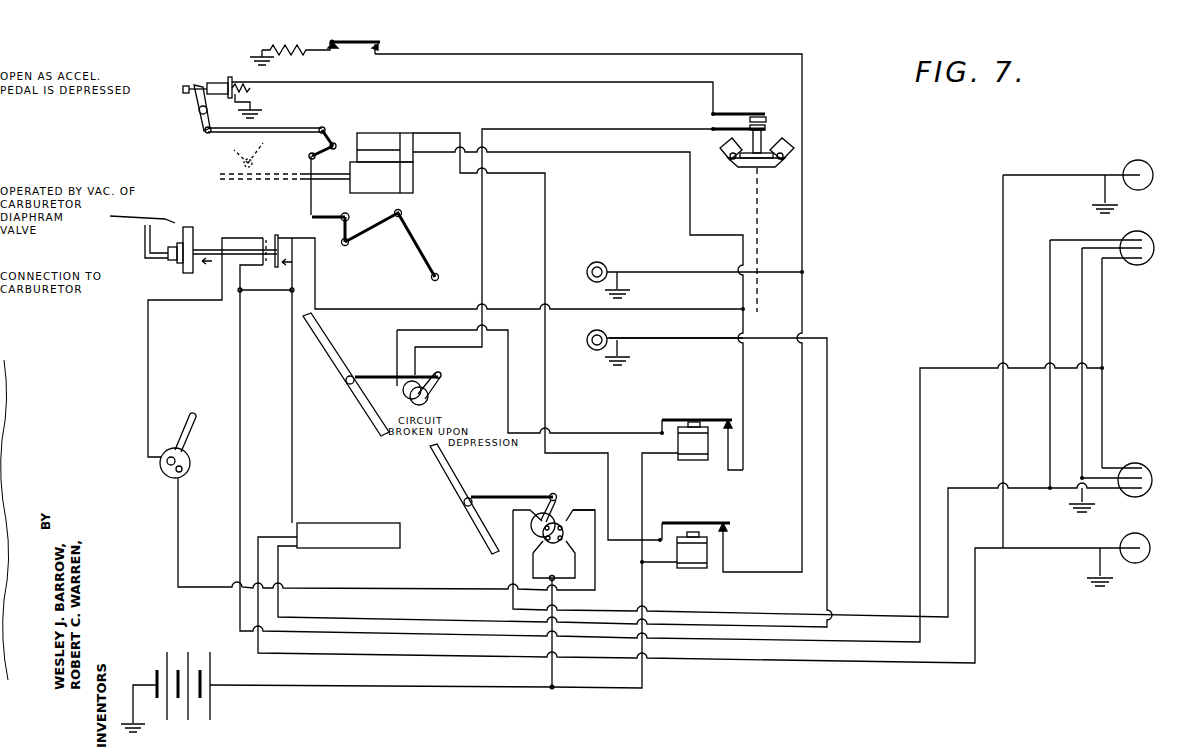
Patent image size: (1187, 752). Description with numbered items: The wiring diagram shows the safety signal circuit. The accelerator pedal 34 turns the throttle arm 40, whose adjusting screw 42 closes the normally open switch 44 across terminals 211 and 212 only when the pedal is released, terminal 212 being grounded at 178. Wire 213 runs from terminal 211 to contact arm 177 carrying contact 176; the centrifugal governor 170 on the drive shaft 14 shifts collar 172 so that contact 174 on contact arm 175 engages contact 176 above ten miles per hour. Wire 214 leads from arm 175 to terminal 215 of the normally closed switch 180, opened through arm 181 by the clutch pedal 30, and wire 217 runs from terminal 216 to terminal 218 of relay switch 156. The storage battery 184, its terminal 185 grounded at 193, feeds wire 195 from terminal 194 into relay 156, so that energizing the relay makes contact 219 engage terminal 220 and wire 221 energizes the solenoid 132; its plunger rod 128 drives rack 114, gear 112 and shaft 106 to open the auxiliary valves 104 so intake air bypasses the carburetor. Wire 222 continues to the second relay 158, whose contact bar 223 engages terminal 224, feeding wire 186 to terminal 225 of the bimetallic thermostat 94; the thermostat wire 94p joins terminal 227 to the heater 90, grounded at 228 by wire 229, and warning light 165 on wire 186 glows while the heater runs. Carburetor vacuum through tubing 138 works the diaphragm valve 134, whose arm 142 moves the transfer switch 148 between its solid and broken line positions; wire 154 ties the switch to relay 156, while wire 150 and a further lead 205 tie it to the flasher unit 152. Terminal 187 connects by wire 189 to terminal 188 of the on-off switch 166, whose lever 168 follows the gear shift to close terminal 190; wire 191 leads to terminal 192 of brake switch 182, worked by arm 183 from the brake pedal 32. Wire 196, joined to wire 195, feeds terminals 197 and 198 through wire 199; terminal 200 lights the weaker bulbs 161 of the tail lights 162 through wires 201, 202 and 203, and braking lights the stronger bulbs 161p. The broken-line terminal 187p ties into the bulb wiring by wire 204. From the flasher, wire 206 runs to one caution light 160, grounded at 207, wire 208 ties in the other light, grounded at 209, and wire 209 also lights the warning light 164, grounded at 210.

The drive shaft 14 is at (790, 215).
The clutch pedal 30 is at (340, 370).
The brake pedal 32 is at (448, 482).
The accelerator pedal 34 is at (418, 238).
The arm 40 is at (202, 127).
The adjusting screw 42 is at (183, 86).
The normally open switch 44 is at (210, 82).
The heating element 90 is at (296, 41).
The bimetallic thermostat 94 is at (362, 40).
The wire 94p is at (330, 40).
The auxiliary valves 104 is at (240, 157).
The common shaft 106 is at (282, 140).
The gear 112 is at (260, 155).
The geared rack 114 is at (268, 178).
The arm or rod 128 is at (328, 173).
The solenoid 132 is at (413, 193).
The diaphragm valve 134 is at (186, 226).
The tubing 138 is at (143, 241).
The arm 142 is at (208, 246).
The transfer switch 148 is at (276, 234).
The wire lead 150 is at (292, 378).
The flasher unit 152 is at (337, 523).
The wire lead 154 is at (318, 288).
The relay switch 156 is at (703, 455).
The second relay switch 158 is at (686, 570).
The caution lights 160 is at (1150, 170).
The weaker bulbs 161 is at (1146, 260).
The stronger bulb 161p is at (1150, 234).
The tail light 162 is at (1122, 240).
The warning light 164 is at (596, 350).
The warning light 165 is at (596, 264).
The on-off switch 166 is at (170, 478).
The operating lever 168 is at (185, 436).
The governor 170 is at (818, 144).
The collar 172 is at (762, 132).
The contact 174 is at (765, 125).
The contact arm 175 is at (722, 126).
The contact 176 is at (766, 117).
The contact arm 177 is at (760, 112).
The ground connection 178 is at (262, 110).
The normally closed switch 180 is at (430, 394).
The lever or arm 181 is at (442, 375).
The switch 182 is at (558, 508).
The operating arm 183 is at (560, 494).
The storage battery 184 is at (214, 714).
The battery terminal 185 is at (157, 676).
The wire 186 is at (594, 54).
The terminal 187 is at (260, 238).
The terminal 187p is at (262, 268).
The terminal 188 is at (160, 465).
The wire 189 is at (148, 358).
The terminal 190 is at (186, 470).
The wire 191 is at (178, 556).
The terminal 192 is at (563, 528).
The ground 193 is at (142, 734).
The terminal 194 is at (214, 680).
The wire 195 is at (652, 454).
The wire 196 is at (552, 671).
The terminal 197 is at (563, 539).
The terminal 198 is at (546, 539).
The wire 199 is at (568, 576).
The terminal 200 is at (540, 528).
The wire 201 is at (513, 576).
The wire 202 is at (1082, 432).
The wire 203 is at (1104, 396).
The wire 204 is at (240, 498).
The wire 205 is at (280, 292).
The wire 206 is at (258, 538).
The ground 207 is at (1108, 588).
The wire 208 is at (1052, 172).
The wire 209 is at (278, 576).
The ground 210 is at (632, 364).
The terminal 211 is at (244, 77).
The terminal 212 is at (230, 52).
The wire 213 is at (378, 80).
The wire 214 is at (604, 125).
The terminal 215 is at (418, 372).
The terminal 216 is at (396, 384).
The wire 217 is at (397, 352).
The terminal 218 is at (662, 430).
The contact 219 is at (686, 412).
The terminal 220 is at (734, 426).
The wire 221 is at (418, 133).
The wire 222 is at (398, 128).
The contact bar 223 is at (696, 522).
The terminal 224 is at (730, 527).
The terminal 225 is at (380, 44).
The terminal 227 is at (330, 52).
The ground 228 is at (268, 67).
The wire 229 is at (262, 46).